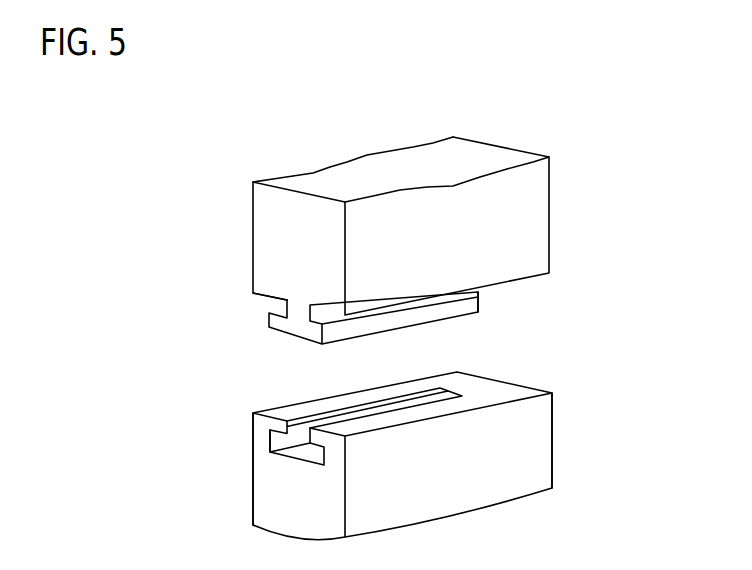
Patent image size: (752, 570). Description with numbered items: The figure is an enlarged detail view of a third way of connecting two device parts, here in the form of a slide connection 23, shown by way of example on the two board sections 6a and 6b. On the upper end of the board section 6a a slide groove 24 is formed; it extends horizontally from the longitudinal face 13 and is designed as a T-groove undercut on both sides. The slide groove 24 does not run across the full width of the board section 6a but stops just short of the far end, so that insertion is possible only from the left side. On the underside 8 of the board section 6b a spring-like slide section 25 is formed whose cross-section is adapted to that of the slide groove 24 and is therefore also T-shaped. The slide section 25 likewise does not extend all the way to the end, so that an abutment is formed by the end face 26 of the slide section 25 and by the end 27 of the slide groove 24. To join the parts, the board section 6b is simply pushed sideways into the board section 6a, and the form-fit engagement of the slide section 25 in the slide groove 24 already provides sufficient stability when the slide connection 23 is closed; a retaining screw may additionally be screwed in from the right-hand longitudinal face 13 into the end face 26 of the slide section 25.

The board section 6a is at (530, 428).
The board section 6b is at (537, 208).
The underside 8 is at (263, 298).
The longitudinal face 13 is at (553, 460).
The slide connection 23 is at (577, 333).
The slide groove 24 is at (240, 435).
The slide section 25 is at (258, 343).
The end face 26 is at (479, 298).
The end 27 is at (440, 390).